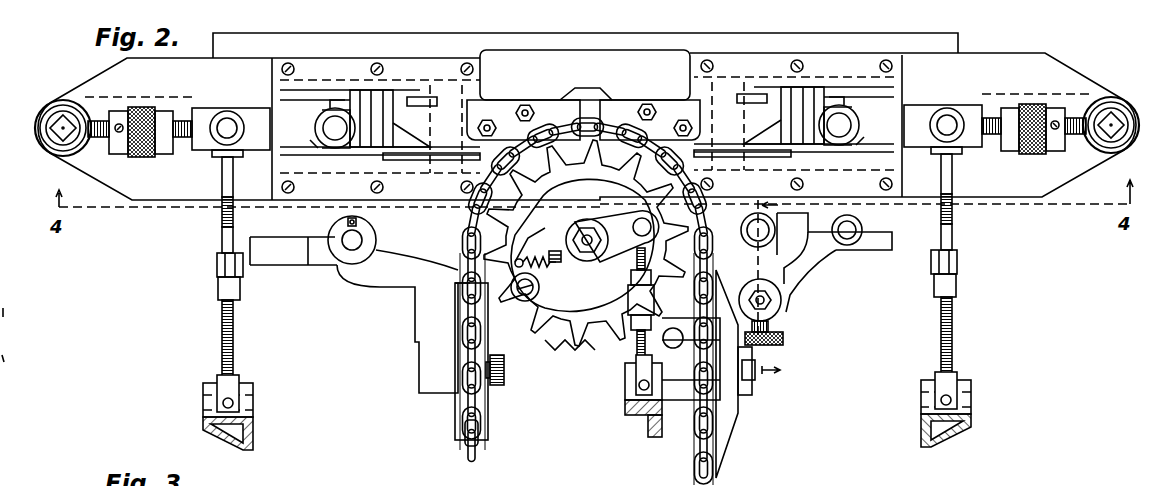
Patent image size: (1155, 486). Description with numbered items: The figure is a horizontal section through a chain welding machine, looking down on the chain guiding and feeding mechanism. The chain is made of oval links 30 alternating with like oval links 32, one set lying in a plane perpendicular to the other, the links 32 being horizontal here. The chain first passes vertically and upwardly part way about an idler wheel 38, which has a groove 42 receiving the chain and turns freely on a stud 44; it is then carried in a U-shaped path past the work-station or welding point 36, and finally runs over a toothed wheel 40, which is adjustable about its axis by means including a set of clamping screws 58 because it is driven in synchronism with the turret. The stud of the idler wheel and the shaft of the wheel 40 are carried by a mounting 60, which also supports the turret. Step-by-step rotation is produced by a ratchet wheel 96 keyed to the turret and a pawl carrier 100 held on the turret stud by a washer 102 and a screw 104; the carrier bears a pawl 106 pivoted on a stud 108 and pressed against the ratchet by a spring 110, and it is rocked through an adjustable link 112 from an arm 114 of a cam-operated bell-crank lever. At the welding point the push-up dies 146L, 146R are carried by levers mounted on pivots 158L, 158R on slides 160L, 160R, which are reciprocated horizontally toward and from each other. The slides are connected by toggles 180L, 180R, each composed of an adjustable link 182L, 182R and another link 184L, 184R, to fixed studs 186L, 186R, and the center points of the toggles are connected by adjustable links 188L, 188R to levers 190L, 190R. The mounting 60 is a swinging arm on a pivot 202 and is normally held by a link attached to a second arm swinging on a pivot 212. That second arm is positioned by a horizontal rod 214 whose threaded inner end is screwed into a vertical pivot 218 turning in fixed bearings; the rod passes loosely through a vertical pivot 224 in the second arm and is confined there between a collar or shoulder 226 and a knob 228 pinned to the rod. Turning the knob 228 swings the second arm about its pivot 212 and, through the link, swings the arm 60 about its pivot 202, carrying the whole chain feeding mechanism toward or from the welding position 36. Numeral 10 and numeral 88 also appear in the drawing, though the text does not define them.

The gap / adjustment dimension 10 is at (790, 371).
The oval links 30 is at (462, 242).
The oval links 32 is at (464, 232).
The work-station or welding point 36 is at (583, 92).
The idler wheel 38 is at (489, 421).
The wheel 40 is at (724, 440).
The groove 42 is at (462, 426).
The stud 44 is at (504, 376).
The clamping screws 58 is at (752, 355).
The mounting 60 is at (422, 275).
The lower sprocket teeth 88 is at (565, 345).
The ratchet wheel 96 is at (558, 190).
The pawl carrier 100 is at (620, 222).
The washer 102 is at (572, 232).
The screw 104 is at (586, 228).
The pawl 106 is at (547, 250).
The stud 108 is at (540, 286).
The spring 110 is at (552, 254).
The link 112 is at (636, 268).
The arm 114 is at (625, 412).
The push-up die 146L is at (540, 108).
The push-up die 146R is at (630, 108).
The pivot 158L is at (440, 122).
The pivot 158R is at (734, 122).
The slide 160L is at (412, 162).
The slide 160R is at (777, 160).
The toggle 180L is at (248, 98).
The toggle 180R is at (962, 90).
The adjustable link 182L is at (175, 160).
The adjustable link 182R is at (1067, 155).
The link 184L is at (310, 140).
The link 184R is at (867, 138).
The fixed stud 186L is at (52, 120).
The fixed stud 186R is at (1116, 109).
The adjustable link 188L is at (212, 378).
The adjustable link 188R is at (962, 376).
The lever 190L is at (253, 418).
The lever 190R is at (921, 413).
The pivot 202 is at (374, 238).
The pivot 212 is at (852, 248).
The horizontal rod 214 is at (765, 273).
The vertical pivot 218 is at (742, 238).
The vertical pivot 224 is at (782, 309).
The collar or shoulder 226 is at (783, 296).
The knob 228 is at (784, 340).